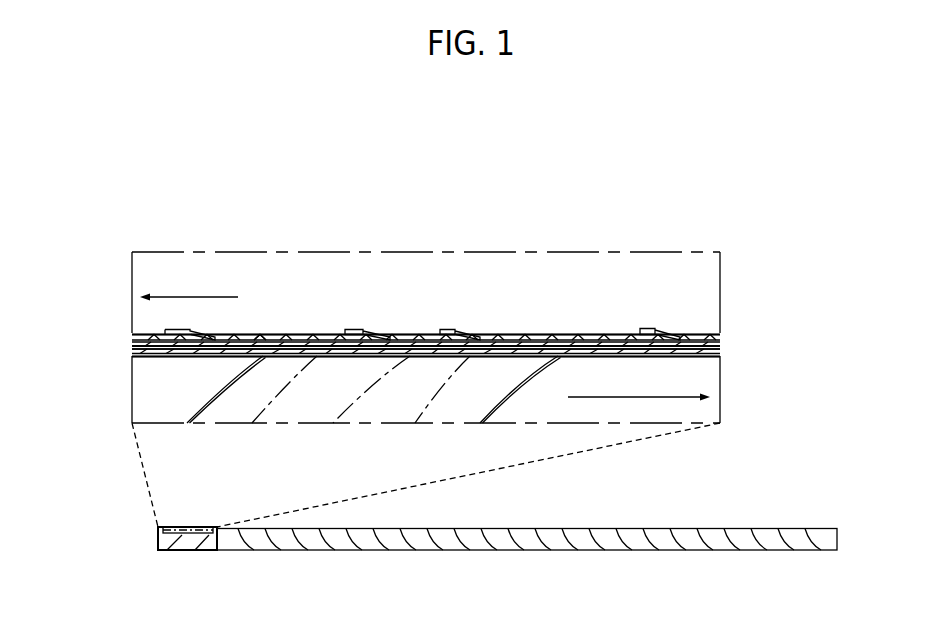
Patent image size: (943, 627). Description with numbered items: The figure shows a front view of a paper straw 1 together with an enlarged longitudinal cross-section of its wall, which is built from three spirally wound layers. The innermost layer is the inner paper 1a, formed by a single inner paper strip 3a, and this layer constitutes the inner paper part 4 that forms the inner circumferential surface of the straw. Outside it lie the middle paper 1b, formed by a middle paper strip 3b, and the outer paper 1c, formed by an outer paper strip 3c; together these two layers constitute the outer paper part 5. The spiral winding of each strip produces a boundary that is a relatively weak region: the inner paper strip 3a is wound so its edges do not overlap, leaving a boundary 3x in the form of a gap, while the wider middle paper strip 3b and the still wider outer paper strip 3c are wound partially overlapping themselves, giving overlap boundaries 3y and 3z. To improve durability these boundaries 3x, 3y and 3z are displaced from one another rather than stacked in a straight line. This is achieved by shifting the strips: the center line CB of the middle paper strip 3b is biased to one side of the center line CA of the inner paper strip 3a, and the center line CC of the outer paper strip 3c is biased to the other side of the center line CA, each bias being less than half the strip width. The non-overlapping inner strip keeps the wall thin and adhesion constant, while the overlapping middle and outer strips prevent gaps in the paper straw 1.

The paper straw 1 is at (130, 192).
The inner paper 1a is at (730, 356).
The middle paper 1b is at (730, 345).
The outer paper 1c is at (730, 335).
The inner paper strip 3a is at (132, 350).
The middle paper strip 3b is at (132, 343).
The outer paper strip 3c is at (132, 336).
The inner paper part 4 is at (68, 358).
The outer paper part 5 is at (68, 312).
The paper strip boundary 3x is at (260, 327).
The paper strip boundary 3y is at (476, 325).
The paper strip boundary 3z is at (647, 320).
The center line of the middle paper strip CB is at (252, 404).
The center line of the inner paper strip CA is at (363, 404).
The center line of the outer paper strip CC is at (479, 404).